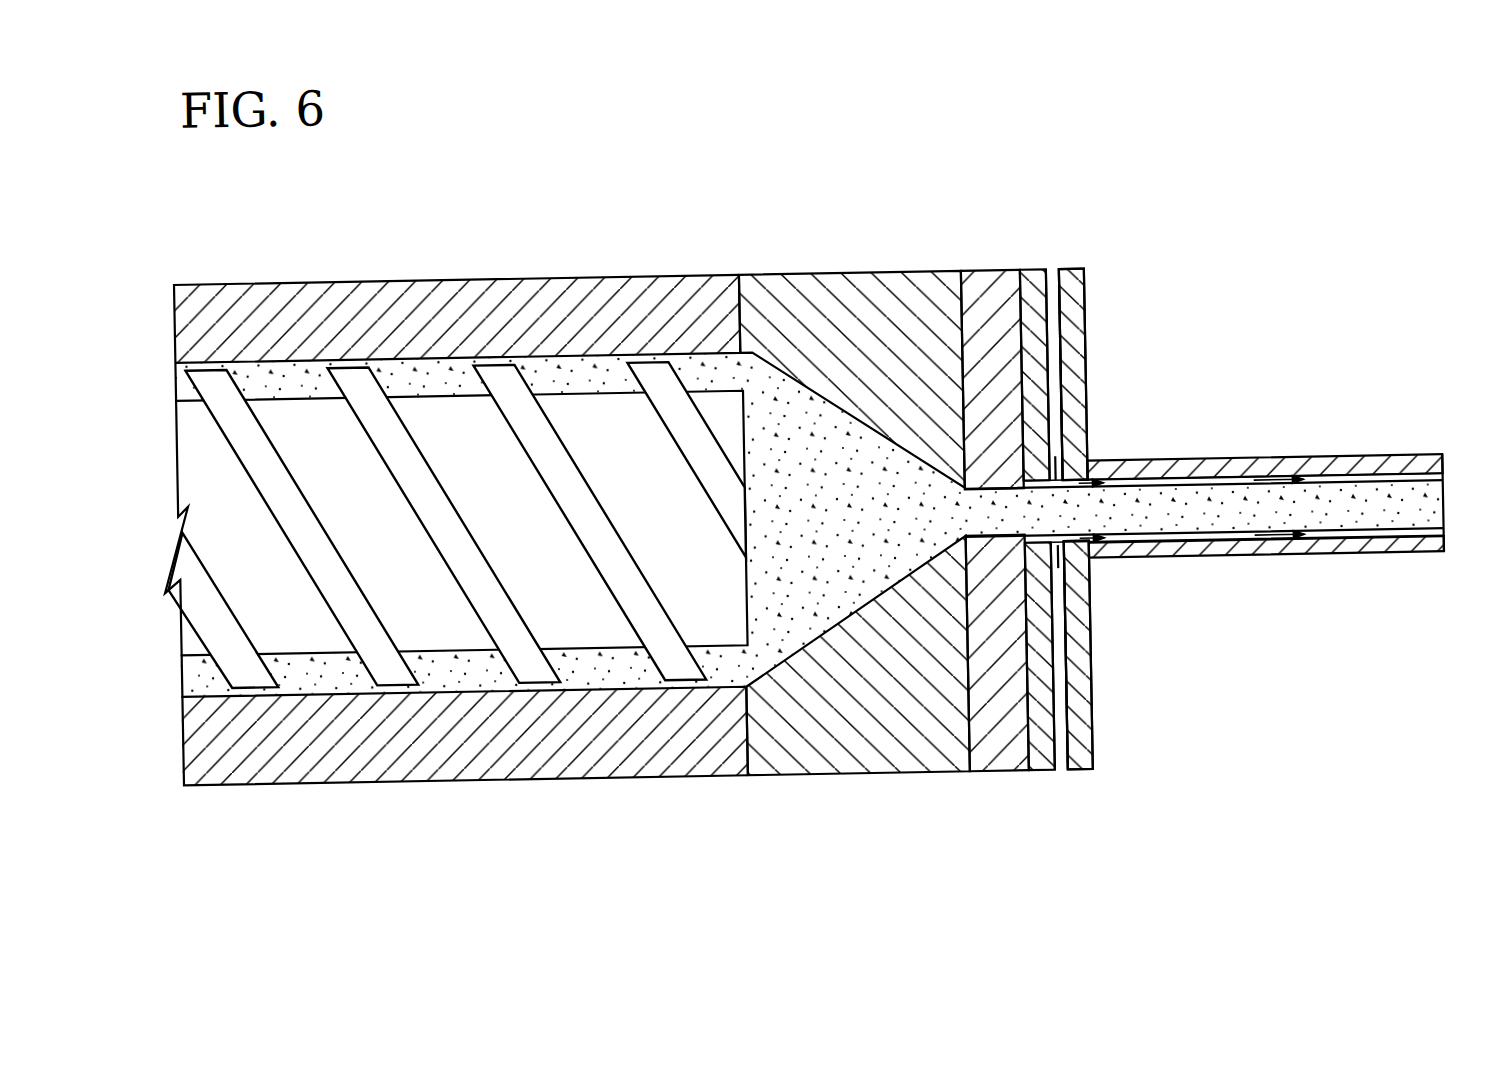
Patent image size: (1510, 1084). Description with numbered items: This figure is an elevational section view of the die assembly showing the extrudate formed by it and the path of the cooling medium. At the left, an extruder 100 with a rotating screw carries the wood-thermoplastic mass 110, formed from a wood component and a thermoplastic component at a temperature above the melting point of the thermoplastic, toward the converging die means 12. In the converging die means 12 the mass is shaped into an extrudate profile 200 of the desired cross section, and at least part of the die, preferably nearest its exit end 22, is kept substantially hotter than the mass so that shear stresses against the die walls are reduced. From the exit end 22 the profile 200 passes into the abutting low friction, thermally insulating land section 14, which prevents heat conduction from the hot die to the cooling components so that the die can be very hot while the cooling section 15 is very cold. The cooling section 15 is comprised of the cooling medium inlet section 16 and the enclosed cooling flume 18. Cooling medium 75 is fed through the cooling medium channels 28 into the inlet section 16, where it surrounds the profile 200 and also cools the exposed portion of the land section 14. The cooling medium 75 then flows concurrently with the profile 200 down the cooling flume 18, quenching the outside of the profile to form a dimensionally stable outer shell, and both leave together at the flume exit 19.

The extruder 100 is at (473, 285).
The wood-thermoplastic mass 110 is at (584, 370).
The converging die means 12 is at (767, 288).
The land section 14 is at (983, 292).
The cooling section 15 is at (1428, 170).
The cooling medium inlet section 16 is at (1079, 336).
The cooling flume 18 is at (1140, 477).
The flume exit 19 is at (1426, 523).
The exit end 22 is at (960, 529).
The cooling medium channels 28 is at (1065, 411).
The cooling medium 75 is at (1052, 273).
The profile 200 is at (1008, 534).